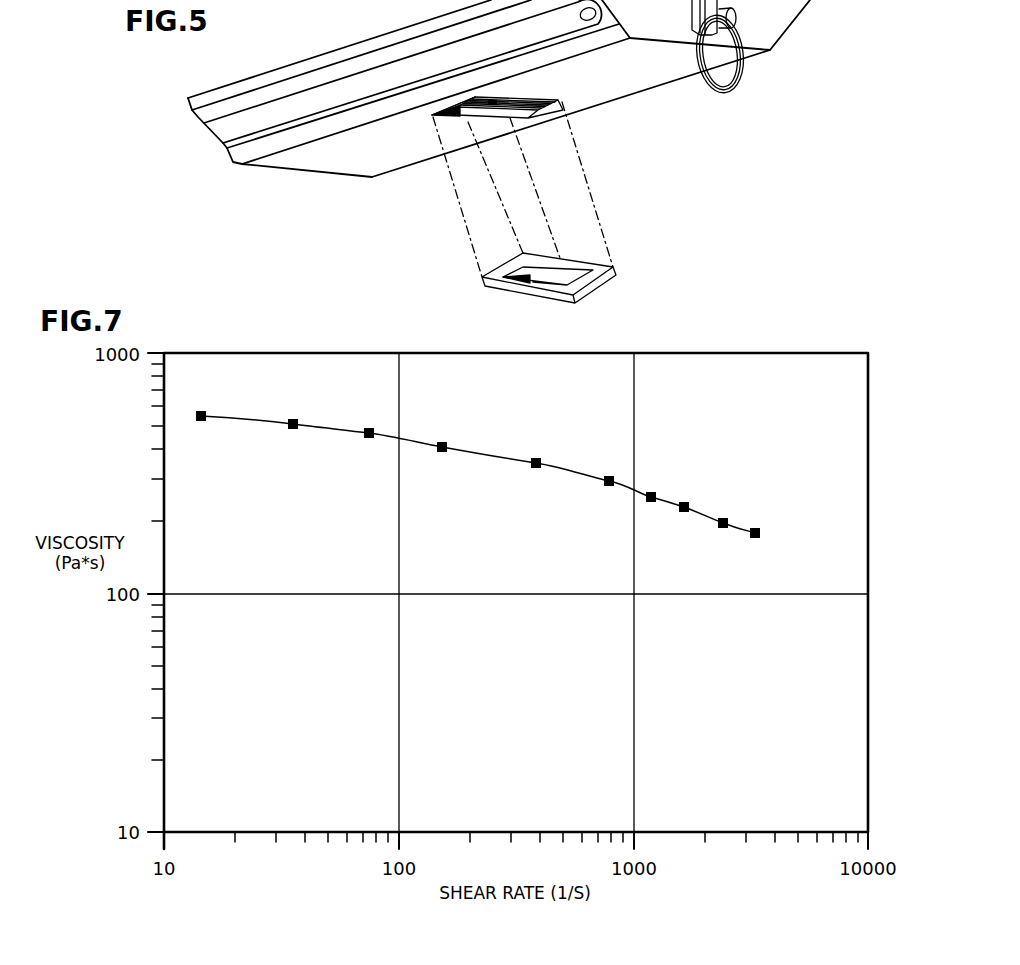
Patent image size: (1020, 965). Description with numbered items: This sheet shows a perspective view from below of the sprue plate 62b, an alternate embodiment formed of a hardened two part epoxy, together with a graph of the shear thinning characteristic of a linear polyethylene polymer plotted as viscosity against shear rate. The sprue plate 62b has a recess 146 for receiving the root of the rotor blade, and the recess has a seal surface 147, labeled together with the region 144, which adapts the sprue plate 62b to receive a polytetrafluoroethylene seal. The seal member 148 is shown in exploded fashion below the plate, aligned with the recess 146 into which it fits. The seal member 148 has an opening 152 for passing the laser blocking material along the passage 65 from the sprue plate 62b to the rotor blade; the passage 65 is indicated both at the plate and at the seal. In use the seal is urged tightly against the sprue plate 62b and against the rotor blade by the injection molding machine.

The sprue plate 62b is at (293, 177).
The opening in holder 144 is at (465, 109).
The seal surface 147 is at (453, 106).
The recess 146 is at (535, 110).
The passage 65 is at (498, 103).
The nozzle body 148 is at (578, 258).
The opening 152 is at (593, 271).